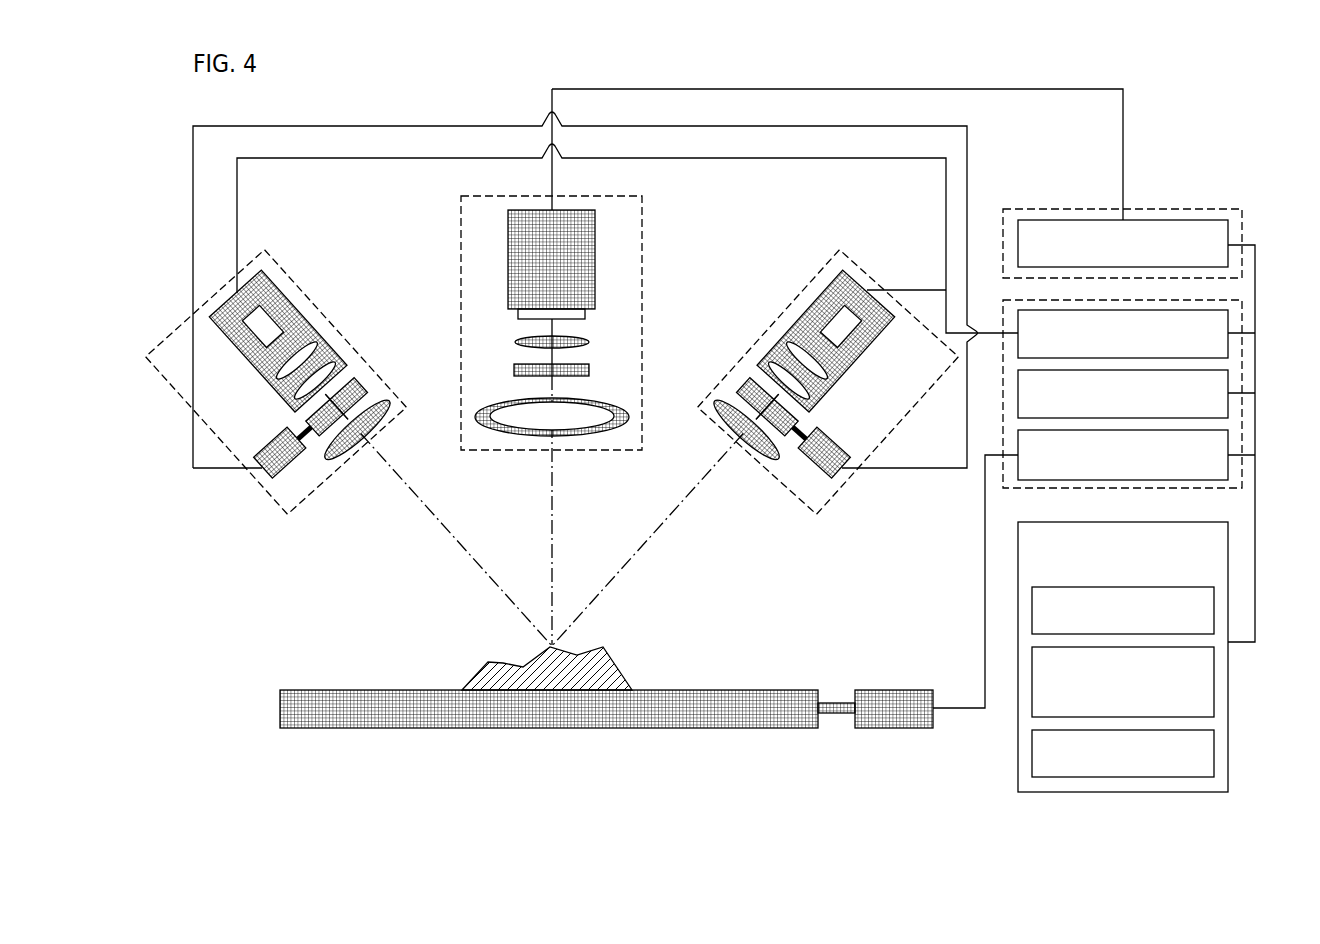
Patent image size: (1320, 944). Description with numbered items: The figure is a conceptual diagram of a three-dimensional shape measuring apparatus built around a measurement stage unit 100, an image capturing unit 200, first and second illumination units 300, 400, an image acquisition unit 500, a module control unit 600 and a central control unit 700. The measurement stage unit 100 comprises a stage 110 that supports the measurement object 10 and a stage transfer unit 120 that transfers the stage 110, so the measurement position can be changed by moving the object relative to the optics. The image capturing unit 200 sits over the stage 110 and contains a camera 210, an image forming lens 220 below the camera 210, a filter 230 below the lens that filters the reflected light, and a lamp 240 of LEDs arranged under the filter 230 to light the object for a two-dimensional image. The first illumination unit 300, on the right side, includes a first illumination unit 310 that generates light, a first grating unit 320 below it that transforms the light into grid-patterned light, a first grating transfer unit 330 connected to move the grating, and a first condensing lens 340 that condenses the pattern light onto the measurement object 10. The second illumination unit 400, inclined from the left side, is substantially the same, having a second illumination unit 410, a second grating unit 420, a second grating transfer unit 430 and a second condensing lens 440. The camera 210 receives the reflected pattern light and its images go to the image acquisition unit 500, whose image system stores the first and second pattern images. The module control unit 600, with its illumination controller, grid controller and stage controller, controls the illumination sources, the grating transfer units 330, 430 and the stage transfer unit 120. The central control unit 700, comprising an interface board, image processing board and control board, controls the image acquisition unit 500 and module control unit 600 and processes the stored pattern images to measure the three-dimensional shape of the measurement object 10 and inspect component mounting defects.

The measurement object 10 is at (533, 690).
The measurement stage unit 100 is at (606, 759).
The stage 110 is at (790, 707).
The stage transfer unit 120 is at (894, 739).
The image capturing unit 200 is at (642, 245).
The camera 210 is at (508, 252).
The image forming lens 220 is at (578, 337).
The filter 230 is at (514, 364).
The lamp 240 is at (507, 432).
The first illumination unit 300 is at (807, 507).
The first illumination unit 310 is at (820, 263).
The first grating unit 320 is at (750, 383).
The first grating transfer unit 330 is at (820, 477).
The first condensing lens 340 is at (742, 427).
The second illumination unit 400 is at (265, 492).
The second illumination unit 410 is at (290, 297).
The second grating unit 420 is at (357, 380).
The second grating transfer unit 430 is at (290, 470).
The second condensing lens 440 is at (345, 450).
The image acquisition unit 500 is at (1048, 208).
The module control unit 600 is at (1003, 488).
The central control unit 700 is at (1058, 793).